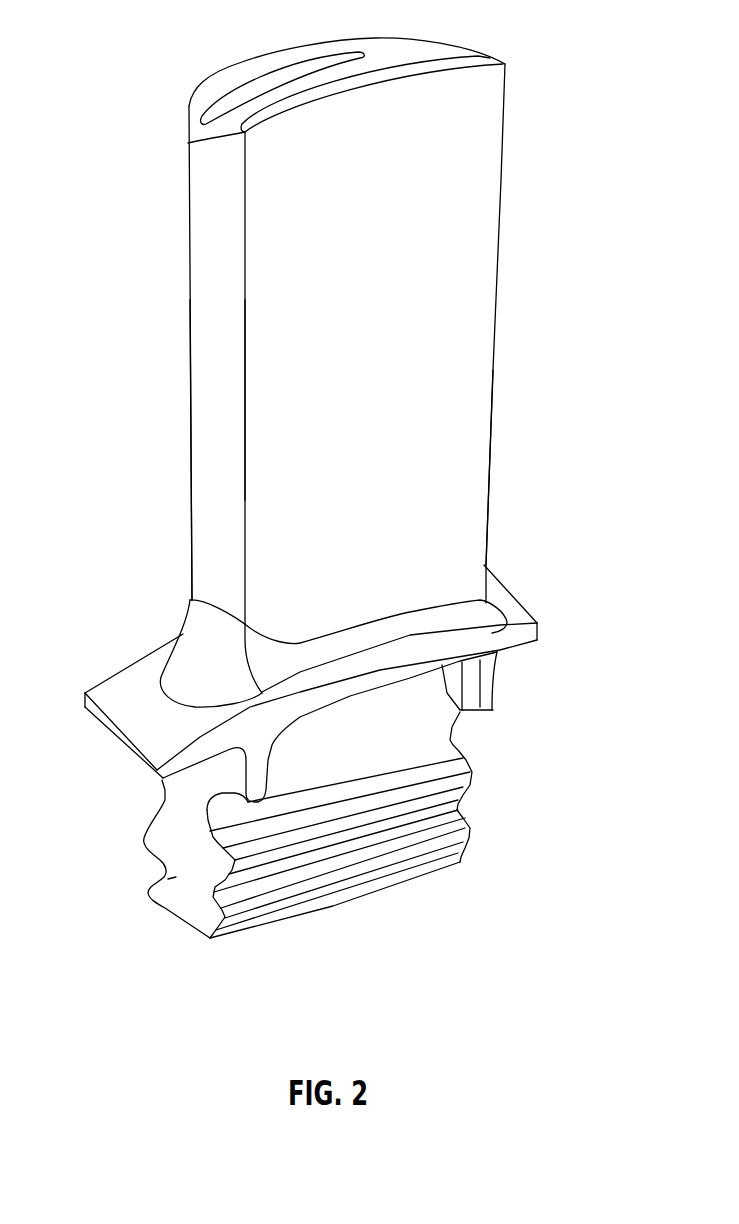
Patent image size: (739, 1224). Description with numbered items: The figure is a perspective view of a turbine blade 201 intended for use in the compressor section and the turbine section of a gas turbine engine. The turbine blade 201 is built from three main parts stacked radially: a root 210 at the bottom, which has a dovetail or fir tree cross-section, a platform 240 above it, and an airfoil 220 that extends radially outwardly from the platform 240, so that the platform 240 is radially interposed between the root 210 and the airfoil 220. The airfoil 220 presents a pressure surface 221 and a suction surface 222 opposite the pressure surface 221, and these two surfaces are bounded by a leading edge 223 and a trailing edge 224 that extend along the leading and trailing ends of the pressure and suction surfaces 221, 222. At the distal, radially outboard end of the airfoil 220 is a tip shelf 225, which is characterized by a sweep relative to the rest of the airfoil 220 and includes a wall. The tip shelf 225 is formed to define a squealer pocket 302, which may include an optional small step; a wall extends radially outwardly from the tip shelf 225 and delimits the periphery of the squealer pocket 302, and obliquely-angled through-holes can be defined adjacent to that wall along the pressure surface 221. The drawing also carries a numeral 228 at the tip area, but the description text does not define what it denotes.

The turbine blade 201 is at (333, 469).
The root 210 is at (152, 888).
The airfoil 220 is at (188, 242).
The pressure surface 221 is at (447, 360).
The suction surface 222 is at (243, 82).
The leading edge 223 is at (207, 487).
The trailing edge 224 is at (490, 440).
The tip shelf 225 is at (524, 115).
The tip cap 228 is at (188, 144).
The platform 240 is at (132, 700).
The squealer pocket 302 is at (238, 92).